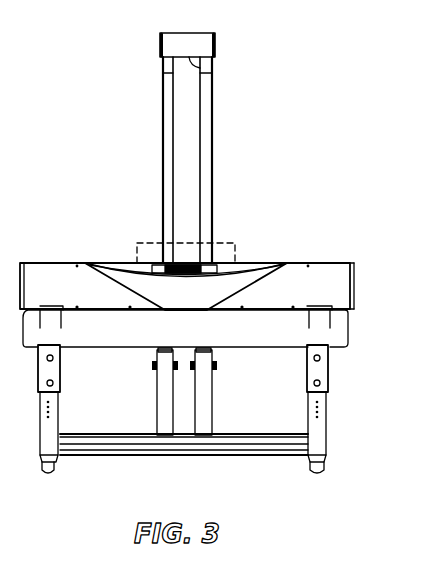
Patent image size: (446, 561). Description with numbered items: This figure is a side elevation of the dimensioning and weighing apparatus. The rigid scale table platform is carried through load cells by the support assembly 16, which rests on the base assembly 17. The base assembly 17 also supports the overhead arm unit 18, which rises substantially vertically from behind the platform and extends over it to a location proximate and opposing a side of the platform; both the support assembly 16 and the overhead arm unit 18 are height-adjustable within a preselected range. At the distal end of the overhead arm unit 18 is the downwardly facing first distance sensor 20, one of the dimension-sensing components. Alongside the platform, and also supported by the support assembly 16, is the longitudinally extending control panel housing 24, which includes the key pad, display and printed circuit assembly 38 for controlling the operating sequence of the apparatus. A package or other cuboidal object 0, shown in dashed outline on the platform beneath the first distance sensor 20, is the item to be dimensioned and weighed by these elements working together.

The overhead arm unit 18 is at (214, 120).
The first distance sensor 20 is at (200, 68).
The control panel housing 24 is at (308, 280).
The key pad, display and printed circuit assembly 38 is at (213, 262).
The sensing zone 0 is at (226, 240).
The support assembly 16 is at (320, 368).
The base assembly 17 is at (322, 440).